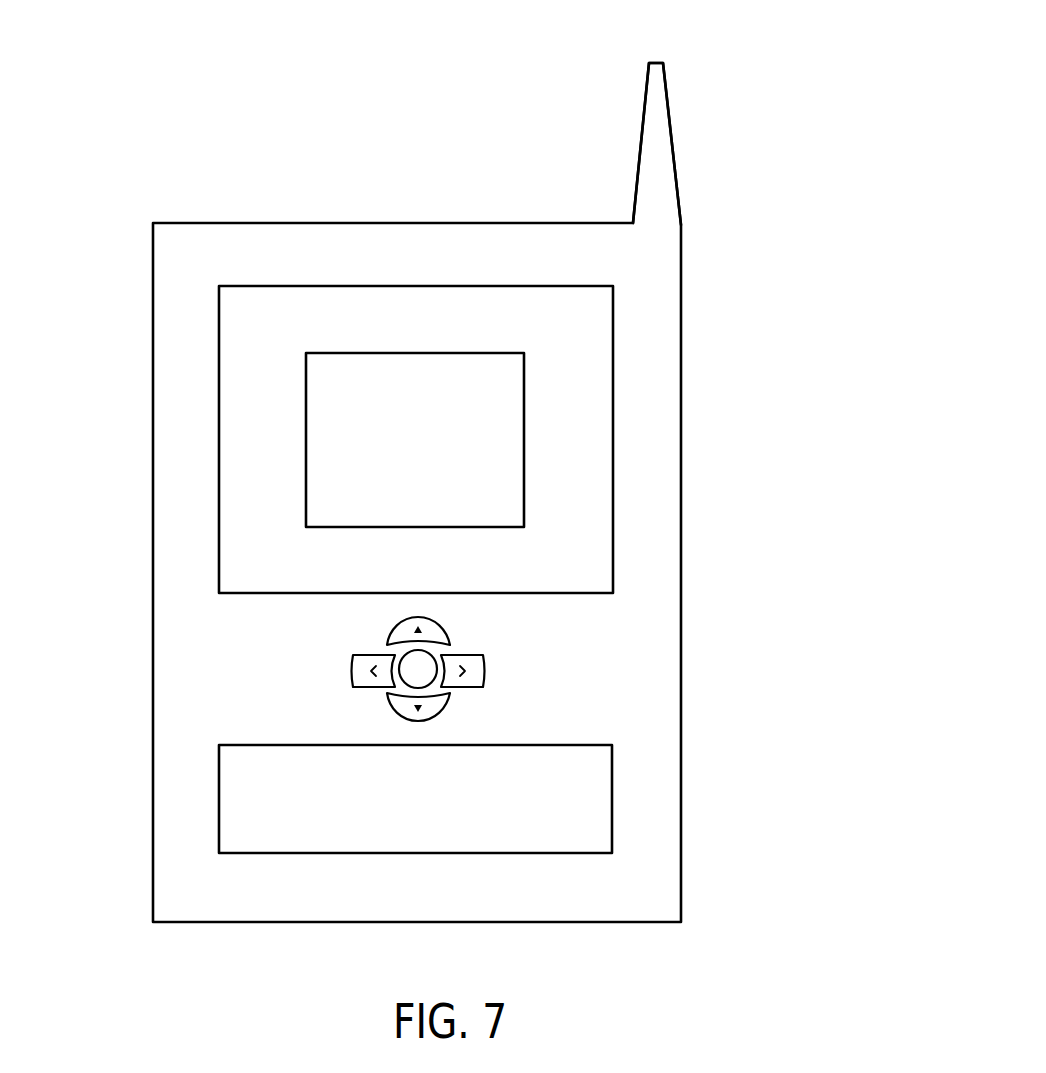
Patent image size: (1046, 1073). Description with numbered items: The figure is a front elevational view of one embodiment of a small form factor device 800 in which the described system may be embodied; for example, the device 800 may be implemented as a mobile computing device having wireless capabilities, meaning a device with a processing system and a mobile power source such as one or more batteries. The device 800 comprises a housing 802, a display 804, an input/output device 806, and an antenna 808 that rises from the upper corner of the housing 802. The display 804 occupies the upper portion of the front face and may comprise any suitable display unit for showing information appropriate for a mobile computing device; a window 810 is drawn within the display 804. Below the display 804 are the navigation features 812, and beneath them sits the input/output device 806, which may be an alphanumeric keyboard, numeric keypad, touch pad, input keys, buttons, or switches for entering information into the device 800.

The small form factor device 800 is at (150, 158).
The housing 802 is at (153, 662).
The display 804 is at (613, 342).
The input/output (I/O) device 806 is at (612, 798).
The antenna 808 is at (641, 142).
The display window 810 is at (417, 352).
The navigation features 812 is at (522, 671).